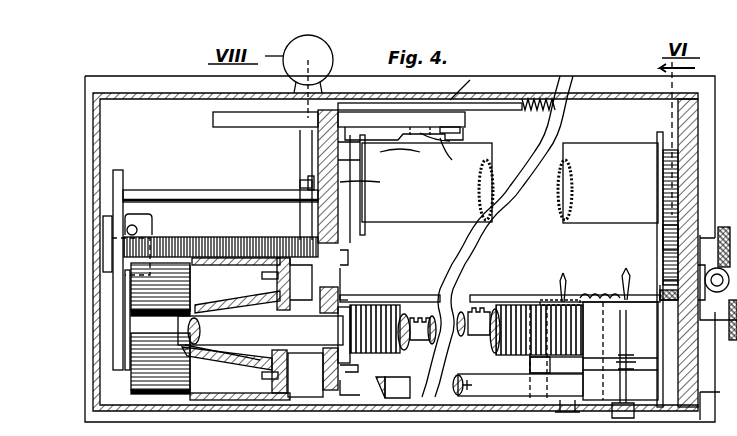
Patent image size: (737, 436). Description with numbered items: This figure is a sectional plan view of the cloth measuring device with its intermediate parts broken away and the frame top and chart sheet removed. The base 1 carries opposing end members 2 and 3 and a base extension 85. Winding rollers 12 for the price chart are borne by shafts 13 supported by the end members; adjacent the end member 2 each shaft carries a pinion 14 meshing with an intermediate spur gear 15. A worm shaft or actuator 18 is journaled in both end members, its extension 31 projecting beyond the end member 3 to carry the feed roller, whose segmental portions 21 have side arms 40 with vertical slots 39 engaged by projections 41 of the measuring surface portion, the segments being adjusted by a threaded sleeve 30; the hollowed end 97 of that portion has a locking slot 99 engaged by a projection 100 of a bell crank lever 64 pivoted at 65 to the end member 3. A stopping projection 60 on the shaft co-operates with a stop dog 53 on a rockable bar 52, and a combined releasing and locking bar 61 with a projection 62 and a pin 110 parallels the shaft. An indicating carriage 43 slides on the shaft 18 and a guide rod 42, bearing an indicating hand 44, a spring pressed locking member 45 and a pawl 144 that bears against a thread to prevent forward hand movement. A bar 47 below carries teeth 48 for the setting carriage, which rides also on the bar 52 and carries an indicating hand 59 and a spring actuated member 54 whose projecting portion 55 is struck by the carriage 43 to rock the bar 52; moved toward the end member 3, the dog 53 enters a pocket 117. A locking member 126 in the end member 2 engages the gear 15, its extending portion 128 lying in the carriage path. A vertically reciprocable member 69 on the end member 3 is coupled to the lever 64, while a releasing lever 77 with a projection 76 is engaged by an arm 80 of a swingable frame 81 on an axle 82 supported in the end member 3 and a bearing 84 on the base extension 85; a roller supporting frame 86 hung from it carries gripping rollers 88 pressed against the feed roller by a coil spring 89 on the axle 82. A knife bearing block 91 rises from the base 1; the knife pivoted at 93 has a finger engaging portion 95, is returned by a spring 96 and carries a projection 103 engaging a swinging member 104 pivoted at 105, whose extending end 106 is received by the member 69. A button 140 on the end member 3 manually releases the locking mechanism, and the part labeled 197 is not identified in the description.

The base 1 is at (100, 418).
The base extension 85 is at (101, 88).
The finger engaging portion 95 is at (325, 60).
The knife bearing block 91 is at (222, 128).
The end member 3 is at (316, 140).
The releasing lever 77 is at (300, 150).
The hollowed out portion 97 is at (360, 108).
The spring 96 is at (536, 122).
The extending end 106 is at (380, 118).
The pivot 93 is at (469, 80).
The pivot 105 is at (462, 133).
The swinging member 104 is at (453, 145).
The projection 103 is at (461, 156).
The winding rollers 12 is at (445, 210).
The shafts 13 is at (364, 178).
The projection 76 is at (408, 154).
The vertically reciprocable member 69 is at (378, 184).
The end member 2 is at (677, 118).
The pinion 14 is at (662, 160).
The spur gear 15 is at (660, 232).
The swingable frame 81 is at (124, 194).
The button 140 is at (273, 181).
The arm 80 is at (306, 182).
The bearing 84 is at (110, 228).
The axle 82 is at (108, 248).
The coil spring 89 is at (220, 237).
The inwardly extending arm 40 is at (270, 258).
The locking slot 99 is at (305, 245).
The gripping rollers 88 is at (160, 328).
The segmental portions 21 is at (206, 328).
The projections 41 is at (260, 276).
The vertical slot 39 is at (258, 294).
The roller supporting frame 86 is at (124, 330).
The extension 31 is at (205, 331).
The stopping projection 60 is at (264, 335).
The sleeve 30 is at (222, 361).
The block 197 is at (305, 375).
The bell crank lever 64 is at (350, 250).
The pivot 65 is at (350, 266).
The projection 62 is at (345, 285).
The projection 100 is at (497, 236).
The combined releasing and locking bar 61 is at (418, 294).
The teeth 48 is at (420, 316).
The horizontally extending bar 47 is at (417, 343).
The stop dog 53 is at (360, 368).
The pocket 117 is at (375, 390).
The worm shaft 18 is at (512, 305).
The rockable bar 52 is at (471, 351).
The guide rod 42 is at (520, 352).
The projecting portion 55 is at (556, 338).
The indicating carriage 43 is at (620, 351).
The locking member 45 is at (632, 364).
The indicating hand 44 is at (622, 285).
The indicating hand 59 is at (560, 288).
The pawl 144 is at (580, 298).
The extending portion 128 is at (660, 290).
The locking member 126 is at (717, 284).
The pin 110 is at (718, 319).
The spring actuated member 54 is at (548, 410).